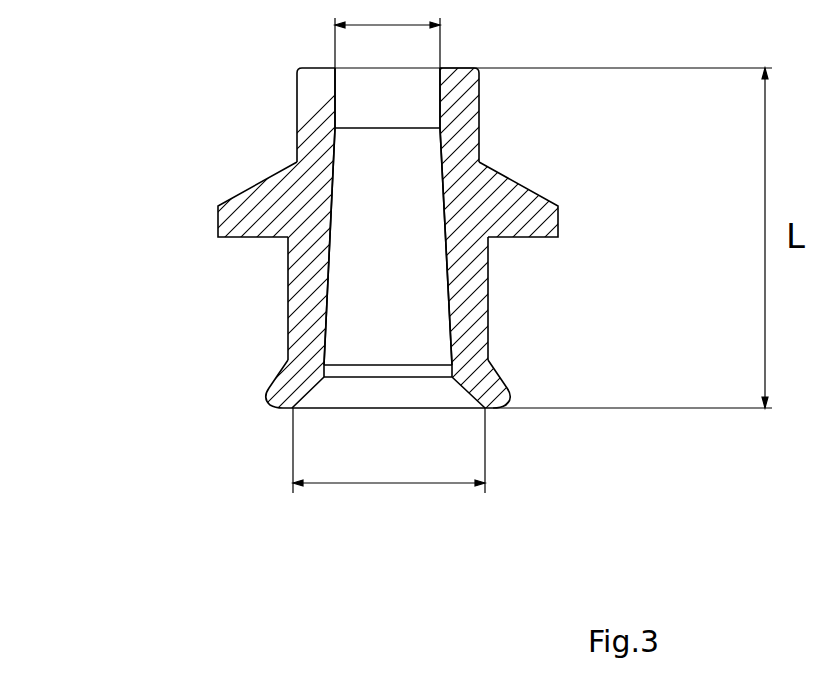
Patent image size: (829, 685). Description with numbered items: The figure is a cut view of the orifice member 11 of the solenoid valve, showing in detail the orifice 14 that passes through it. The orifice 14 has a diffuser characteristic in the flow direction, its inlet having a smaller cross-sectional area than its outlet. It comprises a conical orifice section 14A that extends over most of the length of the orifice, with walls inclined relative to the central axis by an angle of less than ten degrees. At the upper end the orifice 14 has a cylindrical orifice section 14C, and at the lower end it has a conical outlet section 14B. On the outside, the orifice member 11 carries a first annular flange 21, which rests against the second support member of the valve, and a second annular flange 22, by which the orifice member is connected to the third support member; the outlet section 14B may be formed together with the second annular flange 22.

The orifice member 11 is at (263, 291).
The orifice 14 is at (382, 215).
The conical orifice section 14A is at (425, 283).
The conical outlet section 14B is at (425, 392).
The cylindrical orifice section 14C is at (367, 107).
The first annular flange 21 is at (240, 200).
The second annular flange 22 is at (287, 380).